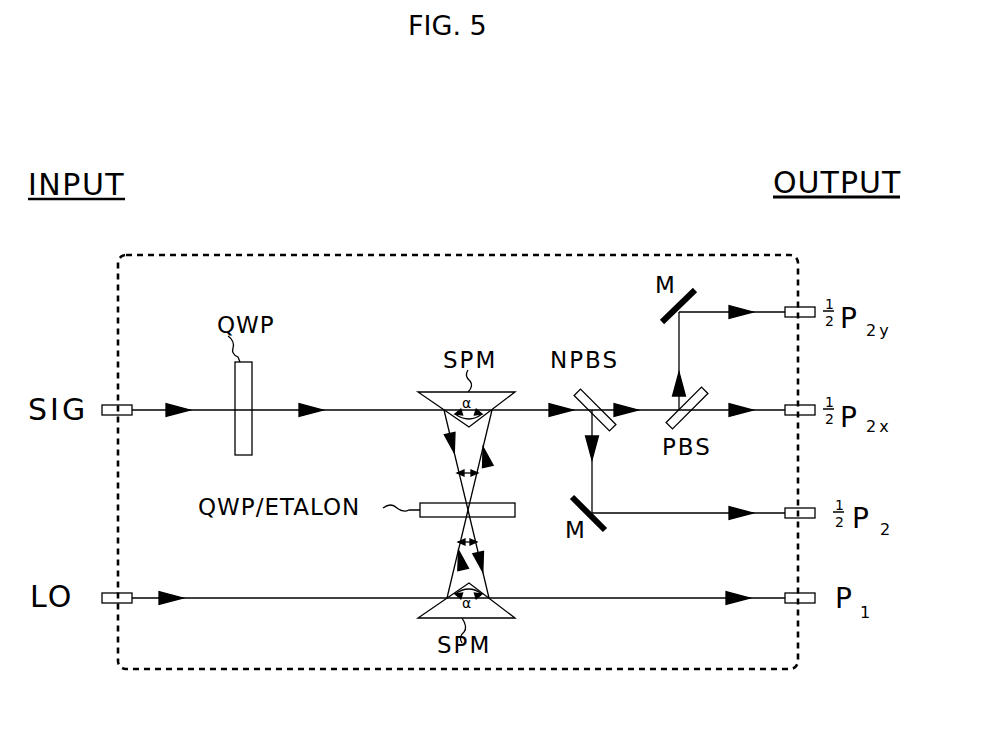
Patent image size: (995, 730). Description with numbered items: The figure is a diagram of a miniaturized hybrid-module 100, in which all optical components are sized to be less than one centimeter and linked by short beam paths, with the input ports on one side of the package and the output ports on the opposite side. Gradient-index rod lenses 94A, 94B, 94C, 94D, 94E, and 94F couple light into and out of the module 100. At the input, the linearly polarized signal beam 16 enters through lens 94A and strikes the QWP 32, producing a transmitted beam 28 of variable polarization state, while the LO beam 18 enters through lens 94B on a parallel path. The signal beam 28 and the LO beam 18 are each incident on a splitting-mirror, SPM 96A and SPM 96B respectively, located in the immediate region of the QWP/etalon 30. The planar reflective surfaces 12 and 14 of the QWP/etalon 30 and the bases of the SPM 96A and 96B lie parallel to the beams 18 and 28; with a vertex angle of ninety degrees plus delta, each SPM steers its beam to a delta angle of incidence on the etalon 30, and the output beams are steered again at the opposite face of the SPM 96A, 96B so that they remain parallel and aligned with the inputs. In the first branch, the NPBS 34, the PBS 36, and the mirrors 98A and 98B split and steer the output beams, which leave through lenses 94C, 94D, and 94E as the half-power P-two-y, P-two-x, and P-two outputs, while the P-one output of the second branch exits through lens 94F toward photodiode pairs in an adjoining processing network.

The planar reflective surface 12 is at (500, 517).
The planar reflective surface 14 is at (497, 503).
The linearly polarized signal beam 16 is at (168, 409).
The LO beam 18 is at (170, 596).
The transmitted signal beam 28 is at (312, 415).
The QWP/etalon 30 is at (420, 517).
The QWP 32 is at (245, 362).
The NPBS 34 is at (610, 425).
The PBS 36 is at (697, 395).
The gradient-index lens 94A is at (128, 415).
The gradient-index lens 94B is at (128, 604).
The gradient-index lens 94C is at (788, 307).
The gradient-index lens 94D is at (788, 405).
The gradient-index lens 94E is at (786, 508).
The gradient-index lens 94F is at (787, 604).
The splitting-mirror 96A is at (425, 393).
The splitting-mirror 96B is at (428, 622).
The mirror 98A is at (665, 314).
The mirror 98B is at (597, 522).
The hybrid-module 100 is at (418, 670).